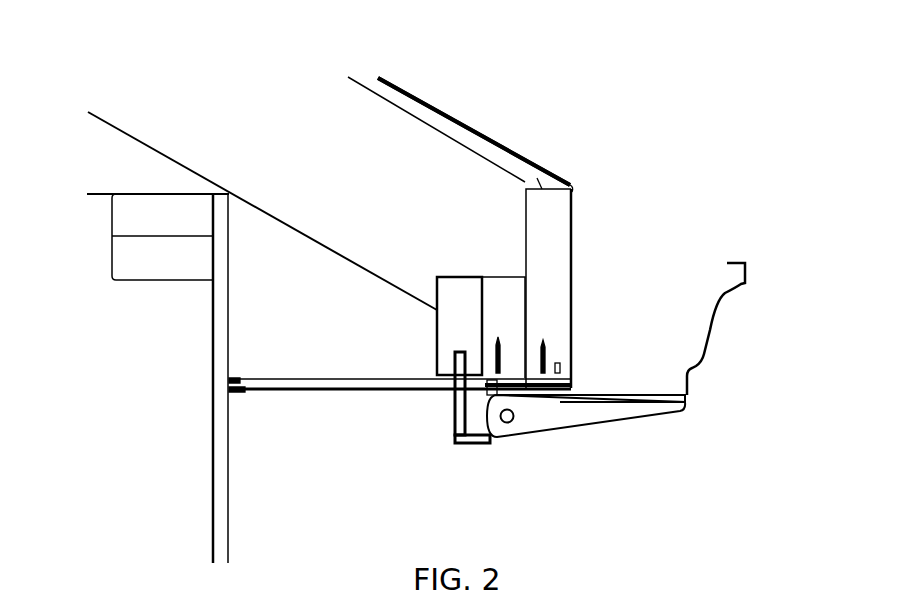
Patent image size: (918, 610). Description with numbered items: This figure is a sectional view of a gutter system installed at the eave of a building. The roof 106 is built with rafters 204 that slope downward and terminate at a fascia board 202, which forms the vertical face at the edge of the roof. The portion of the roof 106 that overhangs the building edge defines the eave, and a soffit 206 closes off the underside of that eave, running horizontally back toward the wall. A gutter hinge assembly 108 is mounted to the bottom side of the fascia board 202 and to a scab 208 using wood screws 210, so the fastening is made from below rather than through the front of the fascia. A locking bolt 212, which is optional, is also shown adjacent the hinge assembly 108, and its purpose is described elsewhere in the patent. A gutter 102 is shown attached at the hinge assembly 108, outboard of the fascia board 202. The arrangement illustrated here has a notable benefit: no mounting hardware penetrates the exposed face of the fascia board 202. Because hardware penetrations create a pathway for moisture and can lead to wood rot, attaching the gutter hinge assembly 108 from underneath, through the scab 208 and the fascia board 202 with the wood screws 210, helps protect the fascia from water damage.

The side wall panel 102 is at (707, 350).
The roof 106 is at (507, 134).
The gutter hinge assembly 108 is at (557, 443).
The fascia board 202 is at (550, 232).
The rafters 204 is at (389, 135).
The soffit 206 is at (350, 392).
The scab 208 is at (497, 290).
The wood screws 210 is at (545, 350).
The locking bolt 212 is at (458, 403).